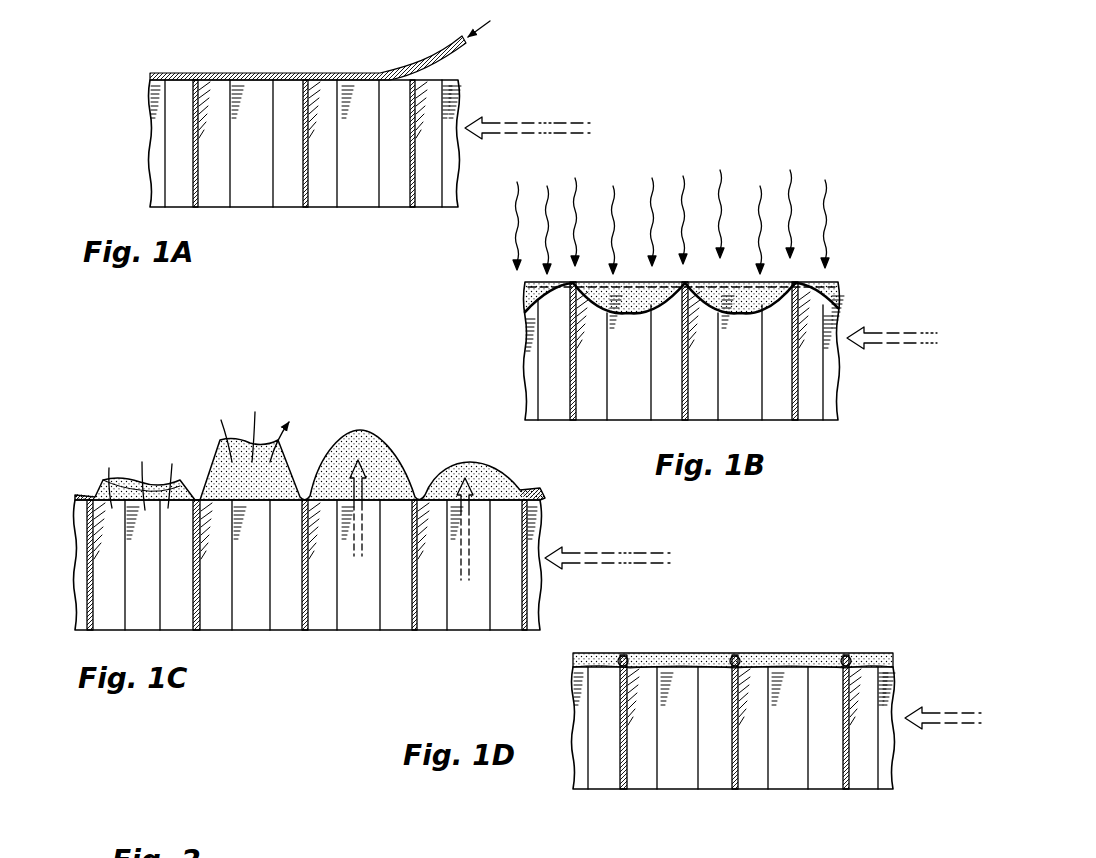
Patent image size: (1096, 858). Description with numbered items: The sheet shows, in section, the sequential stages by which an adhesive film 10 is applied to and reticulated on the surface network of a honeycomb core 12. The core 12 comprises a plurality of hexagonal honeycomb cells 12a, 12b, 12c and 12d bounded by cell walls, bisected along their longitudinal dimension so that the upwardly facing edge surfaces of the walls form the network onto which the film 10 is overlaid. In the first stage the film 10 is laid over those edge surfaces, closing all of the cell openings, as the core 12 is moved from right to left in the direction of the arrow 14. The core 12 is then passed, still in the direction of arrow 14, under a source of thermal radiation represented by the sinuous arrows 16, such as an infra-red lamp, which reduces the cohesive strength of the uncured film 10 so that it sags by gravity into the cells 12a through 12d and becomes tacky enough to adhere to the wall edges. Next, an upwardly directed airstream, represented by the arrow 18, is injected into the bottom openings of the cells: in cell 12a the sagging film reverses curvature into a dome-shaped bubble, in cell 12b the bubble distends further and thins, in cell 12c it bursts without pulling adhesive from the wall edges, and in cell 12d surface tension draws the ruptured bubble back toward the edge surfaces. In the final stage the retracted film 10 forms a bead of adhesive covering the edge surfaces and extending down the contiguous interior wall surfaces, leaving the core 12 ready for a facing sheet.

In FIG. 1A, the adhesive film 10 is at (329, 72).
In FIG. 1B, the adhesive film 10 is at (841, 286).
In FIG. 1C, the adhesive film 10 is at (442, 466).
In FIG. 1D, the adhesive film 10 is at (788, 656).
In FIG. 1A, the honeycomb core 12 is at (157, 177).
In FIG. 1B, the honeycomb core 12 is at (545, 395).
In FIG. 1C, the honeycomb core 12 is at (550, 597).
In FIG. 1D, the honeycomb core 12 is at (897, 688).
In FIG. 1A, the honeycomb cell 12a is at (437, 199).
In FIG. 1B, the honeycomb cell 12a is at (828, 408).
In FIG. 1C, the honeycomb cell 12a is at (465, 618).
In FIG. 1D, the honeycomb cell 12a is at (868, 775).
In FIG. 1A, the honeycomb cell 12b is at (349, 199).
In FIG. 1B, the honeycomb cell 12b is at (738, 410).
In FIG. 1C, the honeycomb cell 12b is at (352, 618).
In FIG. 1D, the honeycomb cell 12b is at (785, 777).
In FIG. 1A, the honeycomb cell 12c is at (262, 199).
In FIG. 1B, the honeycomb cell 12c is at (626, 410).
In FIG. 1C, the honeycomb cell 12c is at (252, 618).
In FIG. 1D, the honeycomb cell 12c is at (680, 777).
In FIG. 1C, the honeycomb cell 12d is at (144, 618).
In FIG. 1D, the honeycomb cell 12d is at (598, 778).
In FIG. 1A, the arrow 14 is at (486, 118).
In FIG. 1B, the arrow 14 is at (866, 328).
In FIG. 1C, the arrow 14 is at (564, 551).
In FIG. 1D, the arrow 14 is at (921, 714).
In FIG. 1B, the sinuous arrows 16 is at (720, 180).
In FIG. 1C, the arrow 18 is at (362, 508).